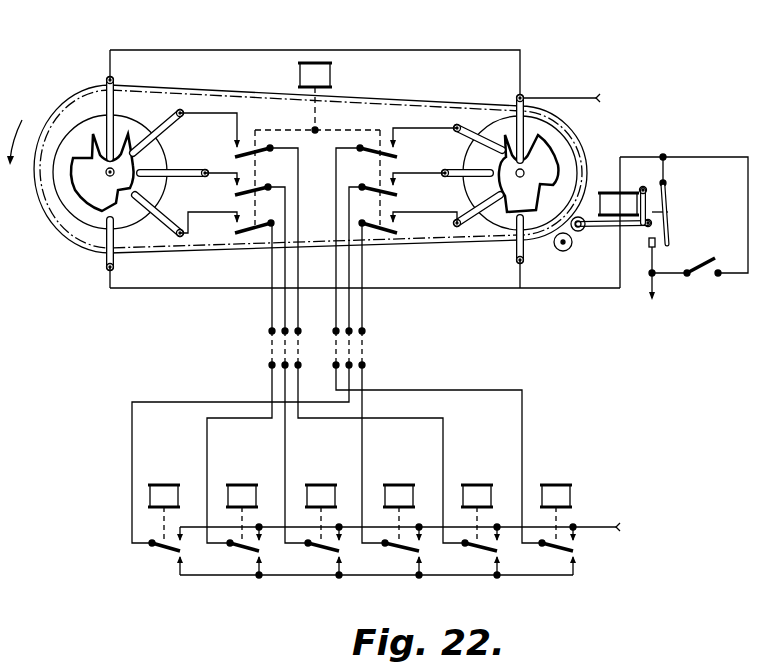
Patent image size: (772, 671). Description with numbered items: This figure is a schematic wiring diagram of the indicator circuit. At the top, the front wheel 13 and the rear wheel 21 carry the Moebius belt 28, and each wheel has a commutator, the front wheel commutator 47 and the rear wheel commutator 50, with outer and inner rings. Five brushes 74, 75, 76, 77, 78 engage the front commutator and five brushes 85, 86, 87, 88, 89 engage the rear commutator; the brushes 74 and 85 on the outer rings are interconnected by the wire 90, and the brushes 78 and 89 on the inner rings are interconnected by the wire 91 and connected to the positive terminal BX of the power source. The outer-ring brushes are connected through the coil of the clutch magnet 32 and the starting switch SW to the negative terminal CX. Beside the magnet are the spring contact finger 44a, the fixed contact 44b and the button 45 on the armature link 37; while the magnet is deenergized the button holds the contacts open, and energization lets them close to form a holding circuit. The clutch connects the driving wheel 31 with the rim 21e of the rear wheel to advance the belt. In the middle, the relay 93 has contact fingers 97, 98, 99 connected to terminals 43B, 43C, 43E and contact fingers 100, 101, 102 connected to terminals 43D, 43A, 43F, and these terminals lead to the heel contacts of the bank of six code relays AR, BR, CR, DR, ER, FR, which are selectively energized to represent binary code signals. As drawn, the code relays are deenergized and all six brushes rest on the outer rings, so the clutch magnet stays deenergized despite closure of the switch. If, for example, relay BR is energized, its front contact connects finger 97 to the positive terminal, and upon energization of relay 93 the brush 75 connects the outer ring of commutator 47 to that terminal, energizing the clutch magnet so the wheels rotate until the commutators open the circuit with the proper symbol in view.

The front wheel 13 is at (40, 218).
The rear wheel 21 is at (582, 143).
The rim of the rear wheel 21e is at (545, 236).
The Moebius belt 28 is at (244, 96).
The driving wheel 31 is at (574, 248).
The clutch magnet 32 is at (610, 194).
The link 37 is at (586, 230).
The spring contact finger 44a is at (666, 228).
The fixed contact 44b is at (652, 265).
The button 45 is at (662, 204).
The front wheel commutator 47 is at (68, 215).
The rear wheel commutator 50 is at (566, 131).
The brush 74 is at (107, 244).
The brush 75 is at (175, 215).
The brush 76 is at (203, 169).
The brush 77 is at (184, 118).
The brush 78 is at (107, 93).
The brush 85 is at (515, 257).
The brush 86 is at (480, 232).
The brush 87 is at (450, 172).
The brush 88 is at (453, 130).
The brush 89 is at (515, 100).
The wire 90 is at (244, 278).
The wire 91 is at (408, 50).
The relay 93 is at (331, 75).
The contact finger 97 is at (258, 222).
The contact finger 98 is at (258, 185).
The contact finger 99 is at (243, 150).
The contact finger 100 is at (397, 229).
The contact finger 101 is at (397, 192).
The contact finger 102 is at (366, 238).
The terminal 43A is at (351, 330).
The terminal 43B is at (270, 334).
The terminal 43C is at (283, 330).
The terminal 43D is at (364, 334).
The terminal 43E is at (297, 329).
The terminal 43F is at (337, 329).
The code relay AR is at (160, 520).
The code relay BR is at (244, 522).
The code relay CR is at (323, 522).
The code relay DR is at (402, 522).
The code relay ER is at (480, 522).
The code relay FR is at (557, 520).
The positive terminal BX is at (416, 314).
The negative terminal CX is at (662, 302).
The starting switch SW is at (684, 227).